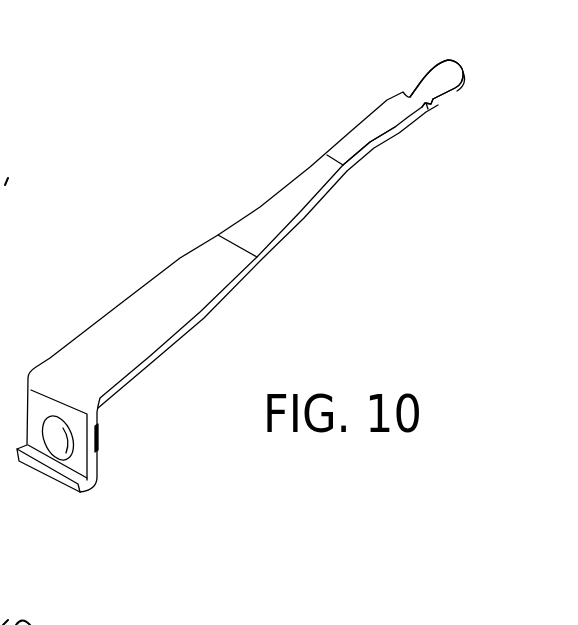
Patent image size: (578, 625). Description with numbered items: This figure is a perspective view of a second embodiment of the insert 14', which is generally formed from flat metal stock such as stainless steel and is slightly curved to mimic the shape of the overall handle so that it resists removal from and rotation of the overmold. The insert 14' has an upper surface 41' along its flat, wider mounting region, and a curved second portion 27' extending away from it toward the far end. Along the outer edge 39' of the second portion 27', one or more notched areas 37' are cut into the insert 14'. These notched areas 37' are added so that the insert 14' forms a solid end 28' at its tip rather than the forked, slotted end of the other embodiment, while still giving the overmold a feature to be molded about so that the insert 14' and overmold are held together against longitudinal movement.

The insert 14' is at (241, 276).
The second portion 27' is at (280, 164).
The solid end 28' is at (490, 59).
The notched areas 37' is at (457, 126).
The outer edge 39' is at (393, 177).
The upper surface 41' is at (81, 365).